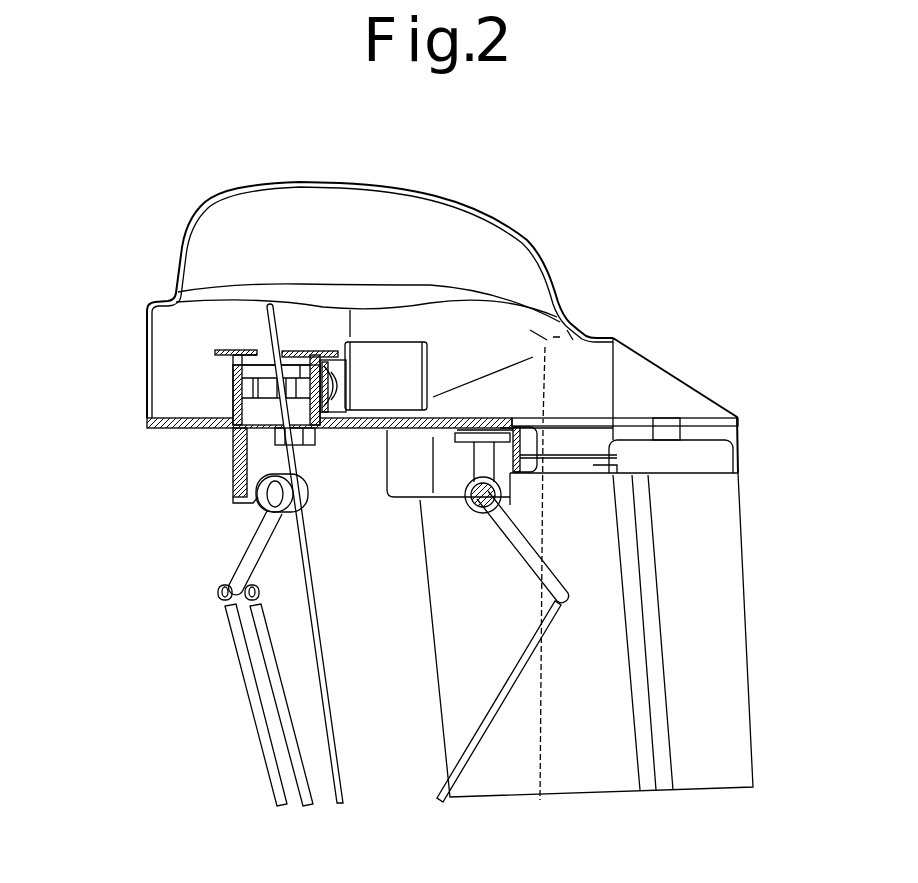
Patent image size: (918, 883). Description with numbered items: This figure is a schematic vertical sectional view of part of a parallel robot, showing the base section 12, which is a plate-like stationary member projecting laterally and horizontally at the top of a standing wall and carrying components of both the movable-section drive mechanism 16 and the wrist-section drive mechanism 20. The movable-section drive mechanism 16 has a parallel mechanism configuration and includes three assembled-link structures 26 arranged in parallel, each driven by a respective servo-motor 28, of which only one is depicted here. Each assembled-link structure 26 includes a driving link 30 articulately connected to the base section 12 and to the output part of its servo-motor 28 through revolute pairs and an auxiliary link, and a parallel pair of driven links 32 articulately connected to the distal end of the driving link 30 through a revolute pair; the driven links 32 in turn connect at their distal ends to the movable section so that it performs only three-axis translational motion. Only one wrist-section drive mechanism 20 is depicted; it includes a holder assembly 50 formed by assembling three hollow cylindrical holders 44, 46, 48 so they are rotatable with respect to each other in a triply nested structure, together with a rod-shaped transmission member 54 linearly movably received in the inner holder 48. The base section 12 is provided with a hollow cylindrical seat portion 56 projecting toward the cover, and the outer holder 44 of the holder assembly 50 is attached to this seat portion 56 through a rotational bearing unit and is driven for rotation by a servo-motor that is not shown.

The base section 12 is at (181, 414).
The movable-section drive mechanism 16 is at (233, 693).
The wrist-section drive mechanism 20 is at (165, 473).
The assembled-link structure 26 is at (447, 619).
The servo-motor 28 is at (390, 343).
The driving link 30 is at (243, 550).
The driven links 32 is at (230, 643).
The outer holder 44 is at (263, 398).
The hollow cylindrical holder 46 is at (267, 353).
The inner holder 48 is at (293, 357).
The holder assembly 50 is at (258, 410).
The rod-shaped transmission member 54 is at (285, 448).
The hollow cylindrical seat portion 56 is at (233, 400).